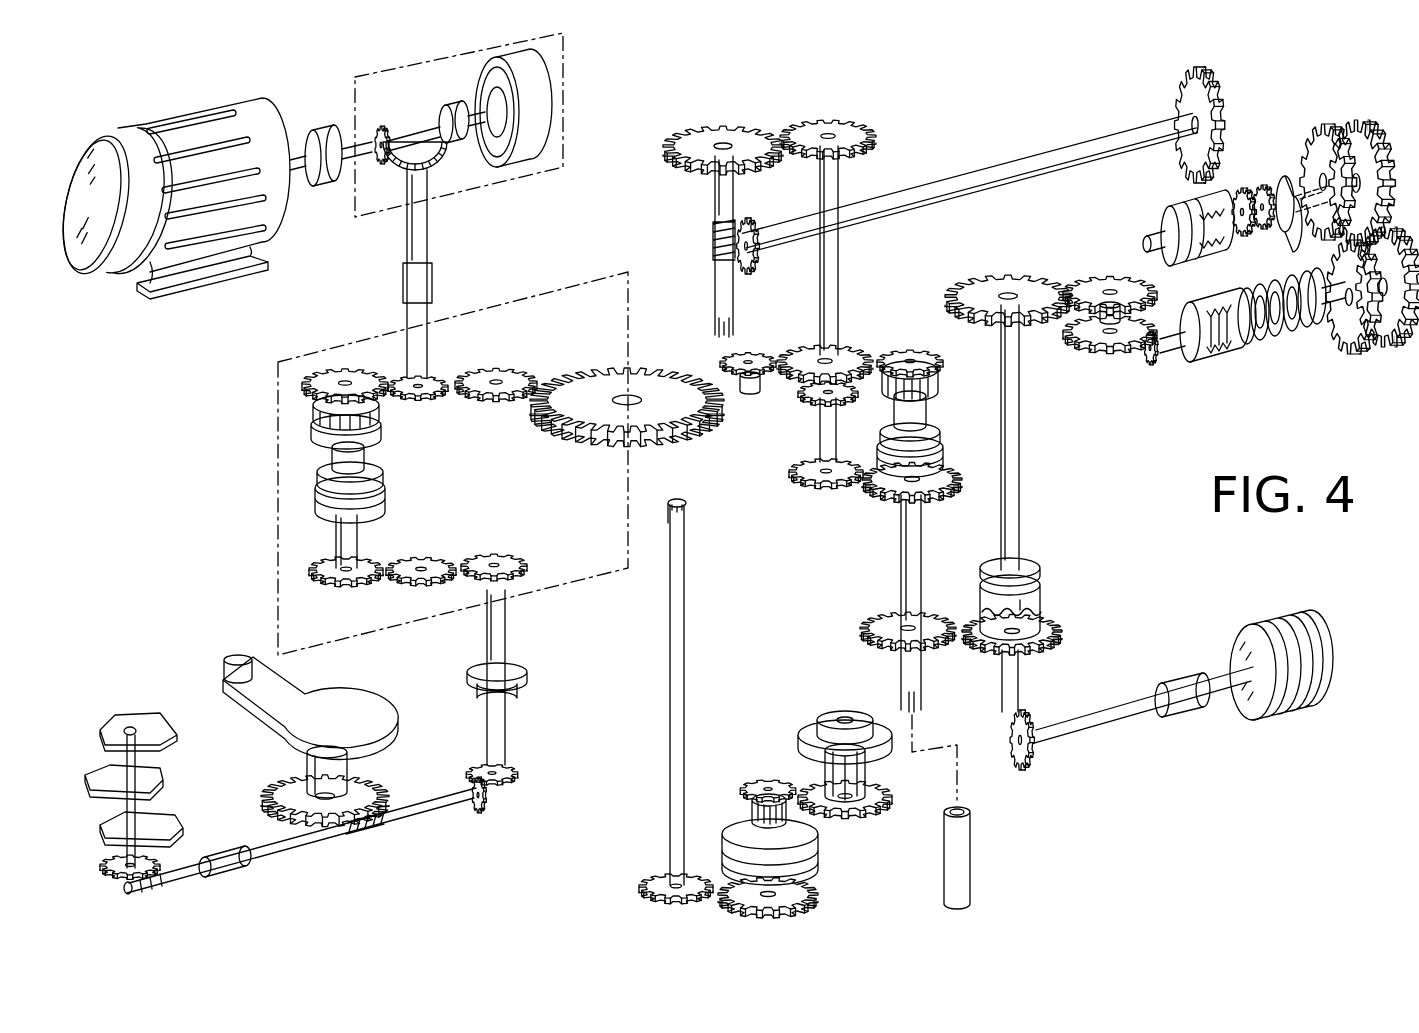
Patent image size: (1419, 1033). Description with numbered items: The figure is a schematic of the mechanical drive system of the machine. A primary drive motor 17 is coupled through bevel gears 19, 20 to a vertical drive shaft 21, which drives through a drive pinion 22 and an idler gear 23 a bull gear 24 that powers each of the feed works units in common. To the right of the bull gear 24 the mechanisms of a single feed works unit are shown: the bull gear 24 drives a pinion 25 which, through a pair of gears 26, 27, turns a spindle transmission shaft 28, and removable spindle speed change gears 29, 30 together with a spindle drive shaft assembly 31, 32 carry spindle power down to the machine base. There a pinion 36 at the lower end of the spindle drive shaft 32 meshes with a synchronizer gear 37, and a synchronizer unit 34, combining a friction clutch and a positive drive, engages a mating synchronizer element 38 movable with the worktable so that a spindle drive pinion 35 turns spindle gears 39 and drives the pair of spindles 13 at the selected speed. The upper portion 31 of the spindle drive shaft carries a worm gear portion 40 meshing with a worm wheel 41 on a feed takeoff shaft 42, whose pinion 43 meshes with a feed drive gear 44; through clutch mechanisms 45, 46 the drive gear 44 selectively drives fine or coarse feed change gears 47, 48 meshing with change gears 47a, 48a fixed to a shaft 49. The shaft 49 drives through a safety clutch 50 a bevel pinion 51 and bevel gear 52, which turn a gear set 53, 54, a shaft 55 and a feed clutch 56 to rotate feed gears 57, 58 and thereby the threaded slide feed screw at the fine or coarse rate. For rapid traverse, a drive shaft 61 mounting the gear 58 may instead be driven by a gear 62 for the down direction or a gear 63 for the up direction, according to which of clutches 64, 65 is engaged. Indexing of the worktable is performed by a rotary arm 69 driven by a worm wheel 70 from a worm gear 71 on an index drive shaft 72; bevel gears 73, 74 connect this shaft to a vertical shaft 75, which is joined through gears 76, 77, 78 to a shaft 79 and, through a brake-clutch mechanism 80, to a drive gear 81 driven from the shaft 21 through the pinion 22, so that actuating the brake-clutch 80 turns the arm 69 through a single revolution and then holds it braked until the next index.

The spindles 13 is at (812, 725).
The primary drive motor 17 is at (185, 130).
The bevel gear 19 is at (382, 128).
The bevel gear 20 is at (434, 160).
The vertical drive shaft 21 is at (412, 312).
The drive pinion 22 is at (440, 380).
The idler gear 23 is at (505, 378).
The bull gear 24 is at (603, 440).
The pinion 25 is at (756, 402).
The gear 26 is at (760, 350).
The gear 27 is at (855, 348).
The spindle transmission shaft 28 is at (840, 262).
The spindle speed change gear 29 is at (832, 124).
The spindle speed change gear 30 is at (723, 130).
The upper portion of spindle drive shaft 31 is at (716, 292).
The spindle drive shaft 32 is at (670, 628).
The synchronizer unit 34 is at (836, 858).
The spindle drive pinion 35 is at (758, 780).
The pinion 36 is at (642, 885).
The synchronizer gear 37 is at (812, 898).
The mating synchronizer element 38 is at (745, 830).
The spindle gear 39 is at (890, 800).
The worm gear portion 40 is at (712, 243).
The worm wheel 41 is at (752, 226).
The feed takeoff shaft 42 is at (1016, 162).
The pinion 43 is at (1182, 104).
The feed drive gear 44 is at (1230, 261).
The clutch mechanism 45 is at (1190, 206).
The clutch mechanism 46 is at (1260, 190).
The fine feed change gear 47 is at (1350, 127).
The change gear 47a is at (1393, 335).
The coarse feed change gear 48 is at (1312, 145).
The change gear 48a is at (1345, 330).
The shaft 49 is at (1305, 299).
The safety clutch 50 is at (1218, 350).
The bevel pinion 51 is at (1150, 366).
The bevel gear 52 is at (1107, 356).
The gear 53 is at (1100, 286).
The gear 54 is at (1001, 290).
The shaft 55 is at (1012, 456).
The feed clutch 56 is at (1040, 598).
The feed gear 57 is at (1060, 630).
The feed gear 58 is at (868, 626).
The drive shaft 61 is at (902, 563).
The gear 62 is at (942, 491).
The gear 63 is at (940, 358).
The clutch 64 is at (935, 440).
The clutch 65 is at (935, 396).
The rotary arm 69 is at (290, 700).
The worm wheel 70 is at (360, 786).
The worm gear 71 is at (373, 834).
The index drive shaft 72 is at (440, 815).
The bevel gear 73 is at (490, 808).
The bevel gear 74 is at (512, 775).
The vertical shaft 75 is at (506, 628).
The gear 76 is at (500, 555).
The gear 77 is at (440, 560).
The gear 78 is at (342, 586).
The shaft 79 is at (360, 534).
The brake-clutch mechanism 80 is at (370, 462).
The drive gear 81 is at (312, 405).